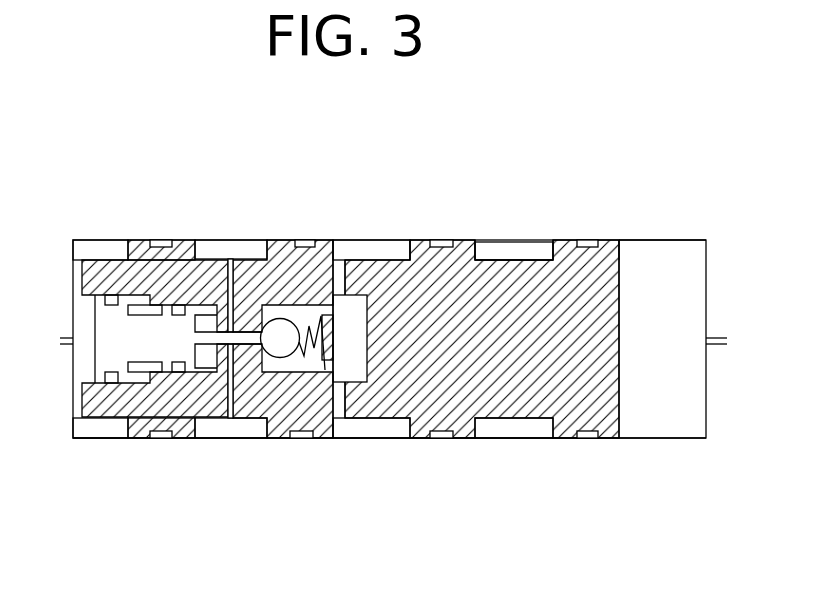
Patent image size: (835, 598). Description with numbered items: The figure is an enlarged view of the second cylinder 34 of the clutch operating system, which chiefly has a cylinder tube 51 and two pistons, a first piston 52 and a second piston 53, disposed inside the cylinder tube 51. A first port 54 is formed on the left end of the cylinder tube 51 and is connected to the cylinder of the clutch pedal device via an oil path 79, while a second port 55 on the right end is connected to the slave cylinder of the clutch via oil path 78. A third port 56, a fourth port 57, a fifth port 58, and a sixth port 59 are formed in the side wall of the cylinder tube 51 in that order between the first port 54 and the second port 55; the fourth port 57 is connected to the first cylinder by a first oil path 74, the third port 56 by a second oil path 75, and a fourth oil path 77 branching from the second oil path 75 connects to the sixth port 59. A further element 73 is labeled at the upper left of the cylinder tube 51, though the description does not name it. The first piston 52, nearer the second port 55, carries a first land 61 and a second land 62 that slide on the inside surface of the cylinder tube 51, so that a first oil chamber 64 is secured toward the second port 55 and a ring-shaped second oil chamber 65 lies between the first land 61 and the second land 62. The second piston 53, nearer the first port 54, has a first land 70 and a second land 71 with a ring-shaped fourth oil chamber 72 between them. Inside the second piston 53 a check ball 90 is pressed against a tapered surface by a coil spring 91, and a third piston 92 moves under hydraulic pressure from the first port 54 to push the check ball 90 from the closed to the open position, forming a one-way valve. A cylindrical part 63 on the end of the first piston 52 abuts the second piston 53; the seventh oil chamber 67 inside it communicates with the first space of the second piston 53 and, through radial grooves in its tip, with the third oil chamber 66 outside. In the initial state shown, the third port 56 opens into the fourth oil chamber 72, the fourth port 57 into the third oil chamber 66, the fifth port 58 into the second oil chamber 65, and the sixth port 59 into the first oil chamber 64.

The second cylinder 34 is at (405, 127).
The cylinder tube 51 is at (645, 439).
The first piston 52 is at (497, 358).
The second piston 53 is at (207, 401).
The first port 54 is at (66, 337).
The second port 55 is at (708, 338).
The third port 56 is at (277, 238).
The fourth port 57 is at (402, 238).
The fifth port 58 is at (521, 240).
The sixth port 59 is at (632, 238).
The first land 61 is at (590, 238).
The second land 62 is at (444, 240).
The cylindrical part 63 is at (357, 420).
The first oil chamber 64 is at (660, 283).
The second oil chamber 65 is at (512, 254).
The third oil chamber 66 is at (374, 251).
The seventh oil chamber 67 is at (354, 353).
The first land 70 is at (300, 238).
The second land 71 is at (157, 240).
The fourth oil chamber 72 is at (232, 250).
The seal ring 73 is at (100, 252).
The first oil path 74 is at (397, 236).
The second oil path 75 is at (258, 238).
The fourth oil path 77 is at (628, 236).
The oil path 78 is at (486, 238).
The oil path 79 is at (66, 346).
The check ball 90 is at (278, 347).
The coil spring 91 is at (315, 356).
The third piston 92 is at (142, 350).